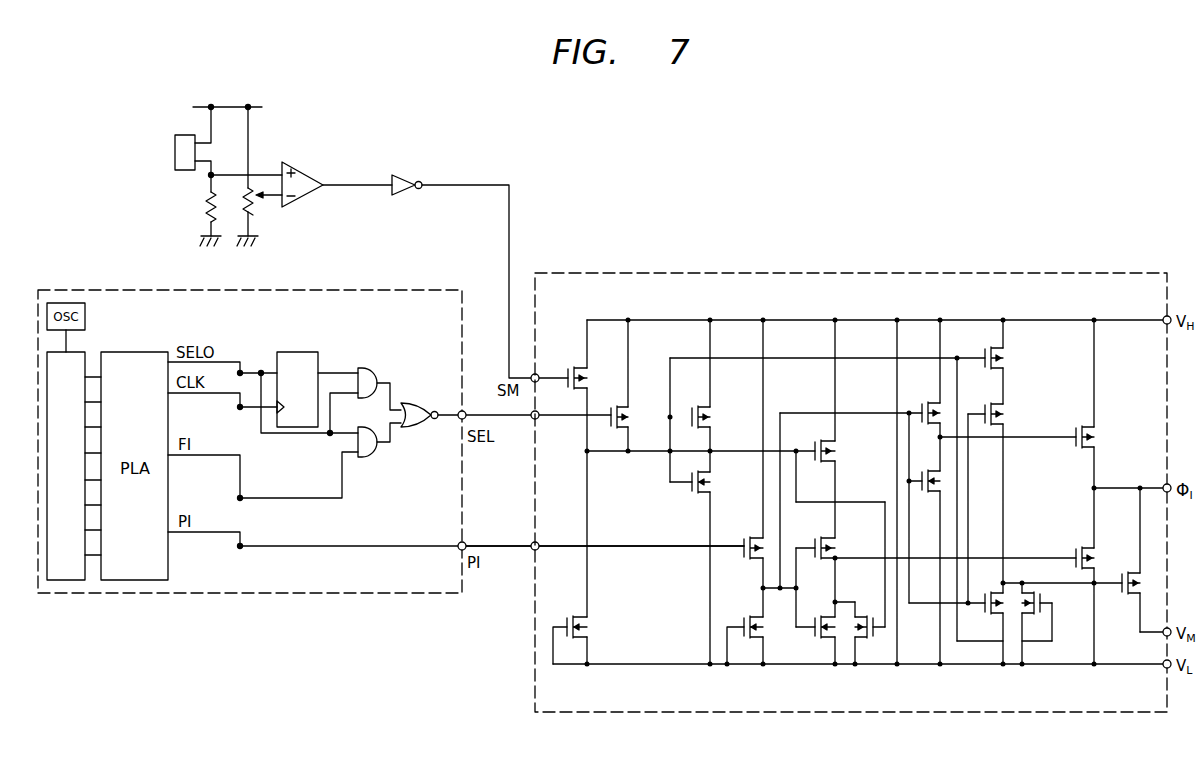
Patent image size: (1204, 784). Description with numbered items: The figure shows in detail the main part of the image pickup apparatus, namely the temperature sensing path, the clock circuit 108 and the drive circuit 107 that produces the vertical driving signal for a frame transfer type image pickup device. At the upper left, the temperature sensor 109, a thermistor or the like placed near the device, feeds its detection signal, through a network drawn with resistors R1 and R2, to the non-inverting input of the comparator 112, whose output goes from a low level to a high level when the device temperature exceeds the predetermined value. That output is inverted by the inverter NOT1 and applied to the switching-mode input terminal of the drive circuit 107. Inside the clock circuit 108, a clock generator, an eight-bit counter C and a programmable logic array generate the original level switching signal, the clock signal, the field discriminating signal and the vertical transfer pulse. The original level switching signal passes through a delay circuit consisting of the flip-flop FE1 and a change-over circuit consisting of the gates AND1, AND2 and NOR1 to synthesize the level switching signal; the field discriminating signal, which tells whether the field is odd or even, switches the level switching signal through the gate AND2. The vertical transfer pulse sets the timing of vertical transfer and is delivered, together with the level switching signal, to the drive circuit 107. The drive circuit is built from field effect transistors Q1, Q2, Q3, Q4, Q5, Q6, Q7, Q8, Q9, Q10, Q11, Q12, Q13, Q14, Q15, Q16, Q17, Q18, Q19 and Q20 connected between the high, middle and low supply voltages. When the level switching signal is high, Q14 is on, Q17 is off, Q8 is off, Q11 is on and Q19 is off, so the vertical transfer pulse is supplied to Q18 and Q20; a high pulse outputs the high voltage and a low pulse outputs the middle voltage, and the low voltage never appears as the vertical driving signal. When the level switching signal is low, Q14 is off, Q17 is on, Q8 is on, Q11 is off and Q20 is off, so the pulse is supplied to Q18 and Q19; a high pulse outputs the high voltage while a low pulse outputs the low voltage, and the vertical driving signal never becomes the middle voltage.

The drive circuit 107 is at (920, 270).
The clock circuit 108 is at (349, 290).
The temperature sensor 109 is at (173, 149).
The comparator 112 is at (312, 177).
The inverter NOT1 is at (416, 177).
The resistor R1 is at (199, 207).
The variable resistor R2 is at (258, 205).
The counter C is at (78, 350).
The flip-flop FE1 is at (290, 352).
The AND gate AND1 is at (368, 365).
The AND gate AND2 is at (370, 474).
The NOR gate NOR1 is at (417, 401).
The FET Q1 is at (566, 367).
The FET Q2 is at (562, 615).
The FET Q3 is at (613, 406).
The FET Q4 is at (693, 403).
The FET Q5 is at (691, 471).
The FET Q6 is at (743, 541).
The FET Q7 is at (739, 615).
The FET Q8 is at (811, 443).
The FET Q9 is at (810, 536).
The FET Q10 is at (815, 614).
The FET Q11 is at (872, 614).
The FET Q12 is at (921, 400).
The FET Q13 is at (920, 470).
The FET Q14 is at (980, 356).
The FET Q15 is at (985, 408).
The FET Q16 is at (984, 616).
The FET Q17 is at (1042, 597).
The FET Q18 is at (1076, 426).
The FET Q19 is at (1075, 547).
The FET Q20 is at (1118, 573).